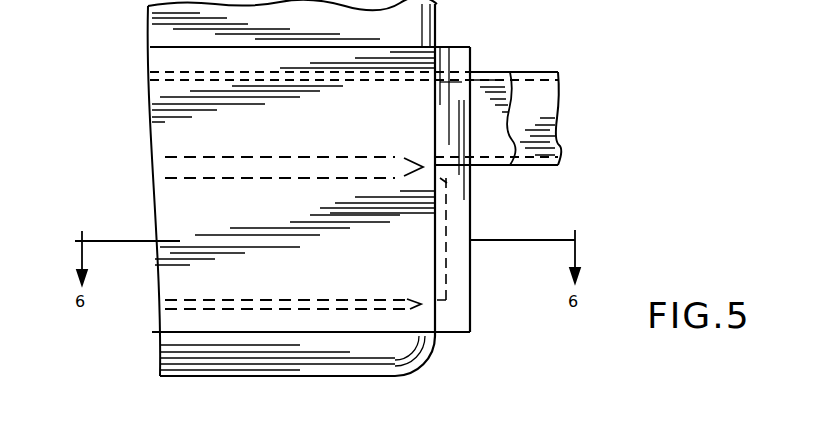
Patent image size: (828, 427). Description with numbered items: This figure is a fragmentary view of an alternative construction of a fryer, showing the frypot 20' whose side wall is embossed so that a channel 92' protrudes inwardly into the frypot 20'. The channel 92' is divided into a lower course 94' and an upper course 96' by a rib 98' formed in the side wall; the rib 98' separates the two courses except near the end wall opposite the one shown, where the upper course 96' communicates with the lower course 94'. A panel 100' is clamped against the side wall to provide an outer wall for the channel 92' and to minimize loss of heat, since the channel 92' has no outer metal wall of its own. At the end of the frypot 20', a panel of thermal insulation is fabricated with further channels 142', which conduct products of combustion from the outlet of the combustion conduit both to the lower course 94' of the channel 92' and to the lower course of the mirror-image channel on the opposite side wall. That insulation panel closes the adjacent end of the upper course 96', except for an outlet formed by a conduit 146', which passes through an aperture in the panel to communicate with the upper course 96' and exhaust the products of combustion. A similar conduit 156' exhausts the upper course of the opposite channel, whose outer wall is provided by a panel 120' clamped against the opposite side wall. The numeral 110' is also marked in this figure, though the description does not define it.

The frypot 20' is at (293, 213).
The channel 92' is at (306, 88).
The lower course 94' is at (260, 305).
The upper course 96' is at (314, 155).
The rib 98' is at (210, 199).
The panel 100' is at (435, 361).
The further channels 142' is at (490, 189).
The conduit 146' is at (496, 82).
The conduit 156' is at (584, 137).
The element 110' is at (324, 425).
The panel 120' is at (409, 424).